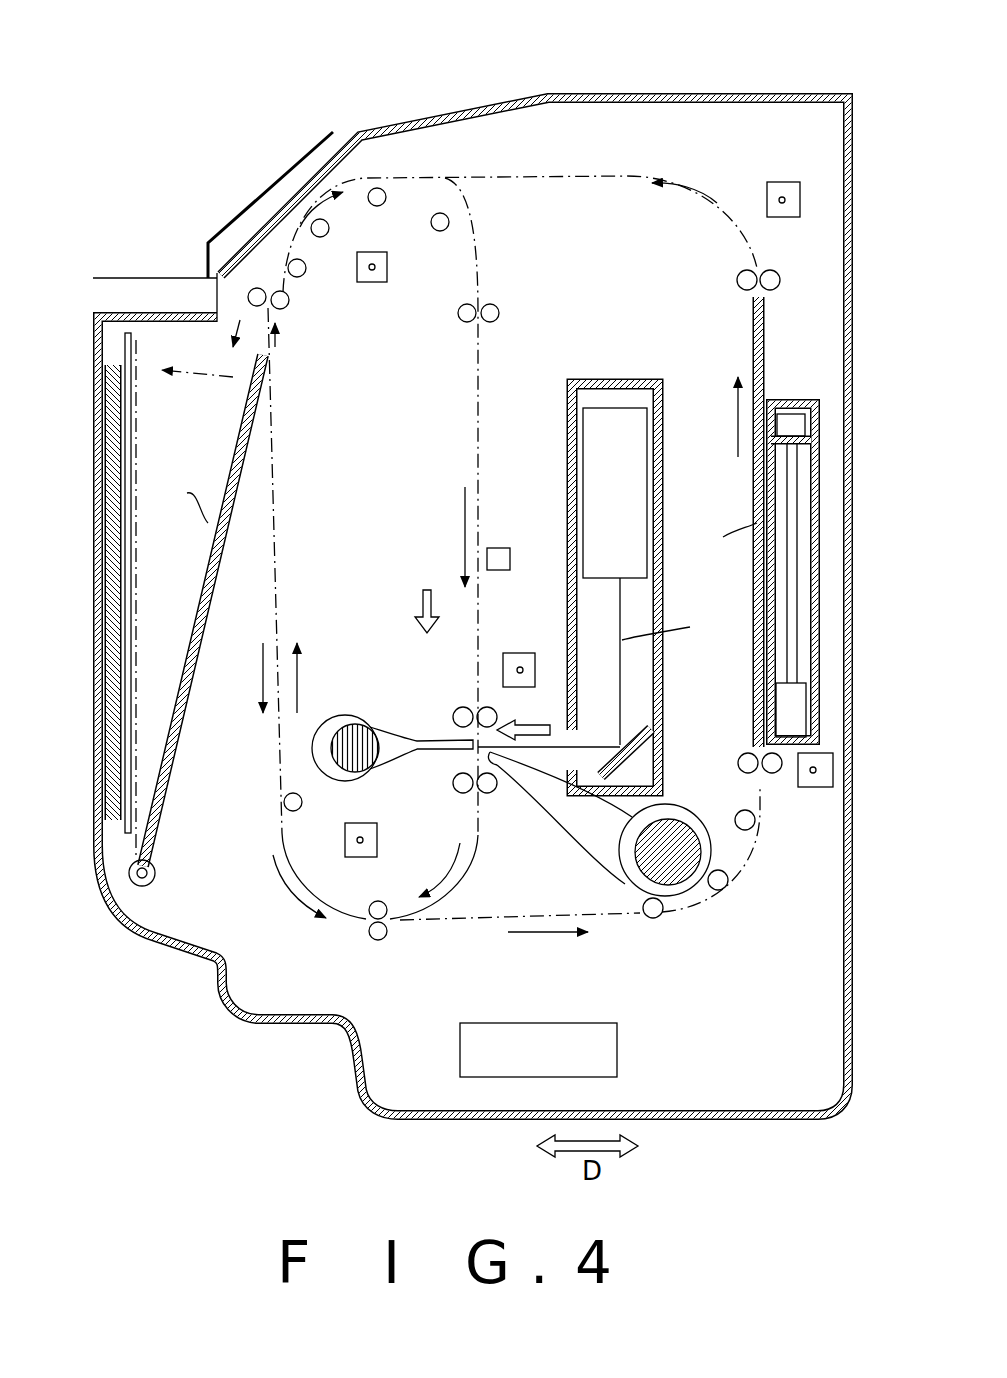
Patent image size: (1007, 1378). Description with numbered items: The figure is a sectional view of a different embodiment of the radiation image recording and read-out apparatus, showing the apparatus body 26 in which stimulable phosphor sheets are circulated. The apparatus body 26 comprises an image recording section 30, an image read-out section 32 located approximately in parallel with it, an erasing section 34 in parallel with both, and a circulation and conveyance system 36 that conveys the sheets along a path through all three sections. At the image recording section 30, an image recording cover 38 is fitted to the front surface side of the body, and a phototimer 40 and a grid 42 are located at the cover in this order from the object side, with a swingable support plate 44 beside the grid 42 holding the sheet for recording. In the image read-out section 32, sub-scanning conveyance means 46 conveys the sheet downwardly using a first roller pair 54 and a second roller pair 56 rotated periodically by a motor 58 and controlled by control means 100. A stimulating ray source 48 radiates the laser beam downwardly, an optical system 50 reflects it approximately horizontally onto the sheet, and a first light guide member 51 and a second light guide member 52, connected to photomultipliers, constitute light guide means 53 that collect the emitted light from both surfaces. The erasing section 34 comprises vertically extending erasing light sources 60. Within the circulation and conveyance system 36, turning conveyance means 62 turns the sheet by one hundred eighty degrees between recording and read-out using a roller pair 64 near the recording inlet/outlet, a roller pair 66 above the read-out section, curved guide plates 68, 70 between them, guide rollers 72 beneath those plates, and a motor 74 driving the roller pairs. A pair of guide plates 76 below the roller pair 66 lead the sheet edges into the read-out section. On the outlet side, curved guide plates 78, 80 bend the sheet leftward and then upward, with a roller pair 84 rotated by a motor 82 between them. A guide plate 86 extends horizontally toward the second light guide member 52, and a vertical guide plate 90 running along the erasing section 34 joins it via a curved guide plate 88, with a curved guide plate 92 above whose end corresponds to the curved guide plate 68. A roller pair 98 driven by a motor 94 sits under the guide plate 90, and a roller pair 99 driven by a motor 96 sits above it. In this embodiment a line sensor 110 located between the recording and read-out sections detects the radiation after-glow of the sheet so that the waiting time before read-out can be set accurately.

The apparatus body 26 is at (803, 40).
The image recording section 30 is at (120, 272).
The image read-out section 32 is at (565, 355).
The erasing section 34 is at (799, 386).
The circulation and conveyance system 36 is at (549, 150).
The image recording cover 38 is at (180, 313).
The phototimer 40 is at (94, 462).
The grid 42 is at (96, 523).
The support plate 44 is at (170, 760).
The sub-scanning conveyance means 46 is at (431, 696).
The stimulating ray source 48 is at (632, 440).
The optical system 50 is at (653, 747).
The first light guide member 51 is at (397, 753).
The second light guide member 52 is at (587, 855).
The light guide means 53 is at (690, 905).
The first roller pair 54 is at (453, 717).
The second roller pair 56 is at (460, 787).
The motor 58 is at (515, 653).
The erasing light source 60 is at (787, 540).
The turning conveyance means 62 is at (383, 165).
The roller pair 64 is at (287, 302).
The roller pair 66 is at (490, 302).
The curved guide plate 68 is at (350, 183).
The curved guide plate 70 is at (467, 280).
The guide roller 72 is at (330, 230).
The motor 74 is at (380, 283).
The guide plate 76 is at (477, 365).
The curved guide plate 78 is at (468, 888).
The curved guide plate 80 is at (357, 923).
The motor 82 is at (380, 847).
The roller pair 84 is at (382, 938).
The guide plate 86 is at (630, 920).
The curved guide plate 88 is at (713, 917).
The guide plate 90 is at (753, 313).
The curved guide plate 92 is at (700, 177).
The motor 94 is at (833, 760).
The motor 96 is at (785, 182).
The roller pair 98 is at (743, 768).
The roller pair 99 is at (740, 273).
The control means 100 is at (618, 1052).
The line sensor 110 is at (500, 547).